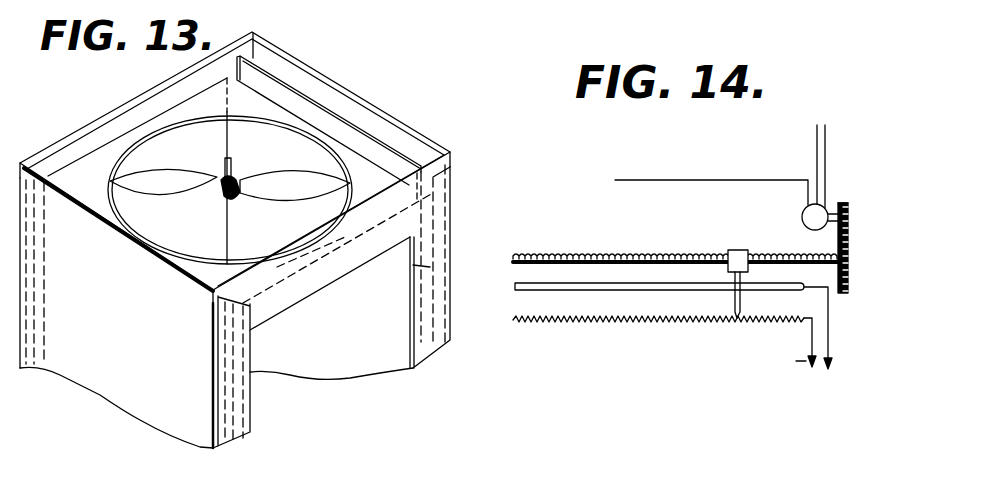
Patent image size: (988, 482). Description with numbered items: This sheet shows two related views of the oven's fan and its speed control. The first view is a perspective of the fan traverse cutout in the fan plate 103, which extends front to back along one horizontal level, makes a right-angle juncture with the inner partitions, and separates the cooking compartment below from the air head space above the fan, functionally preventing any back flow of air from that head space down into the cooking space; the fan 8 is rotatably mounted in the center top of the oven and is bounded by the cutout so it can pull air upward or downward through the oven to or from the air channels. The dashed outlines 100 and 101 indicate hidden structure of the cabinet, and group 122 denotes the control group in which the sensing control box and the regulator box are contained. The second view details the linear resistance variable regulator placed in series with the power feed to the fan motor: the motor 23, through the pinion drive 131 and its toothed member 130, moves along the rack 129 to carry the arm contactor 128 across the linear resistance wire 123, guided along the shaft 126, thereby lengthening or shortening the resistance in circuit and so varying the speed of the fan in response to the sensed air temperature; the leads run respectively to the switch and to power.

In FIG. 13, the fan 8 is at (167, 165).
In FIG. 13, the fan plate 103 is at (208, 103).
In FIG. 13, the cabinet frame 100 is at (433, 193).
In FIG. 13, the hidden rail 101 is at (345, 237).
In FIG. 13, the group 122 is at (430, 267).
In FIG. 14, the motor 23 is at (800, 202).
In FIG. 14, the pinion drive 131 is at (840, 205).
In FIG. 14, the gear rack 130 is at (848, 292).
In FIG. 14, the toothed rack 129 is at (626, 254).
In FIG. 14, the arm contactor 128 is at (737, 250).
In FIG. 14, the shaft 126 is at (527, 284).
In FIG. 14, the resistance wire 123 is at (730, 301).